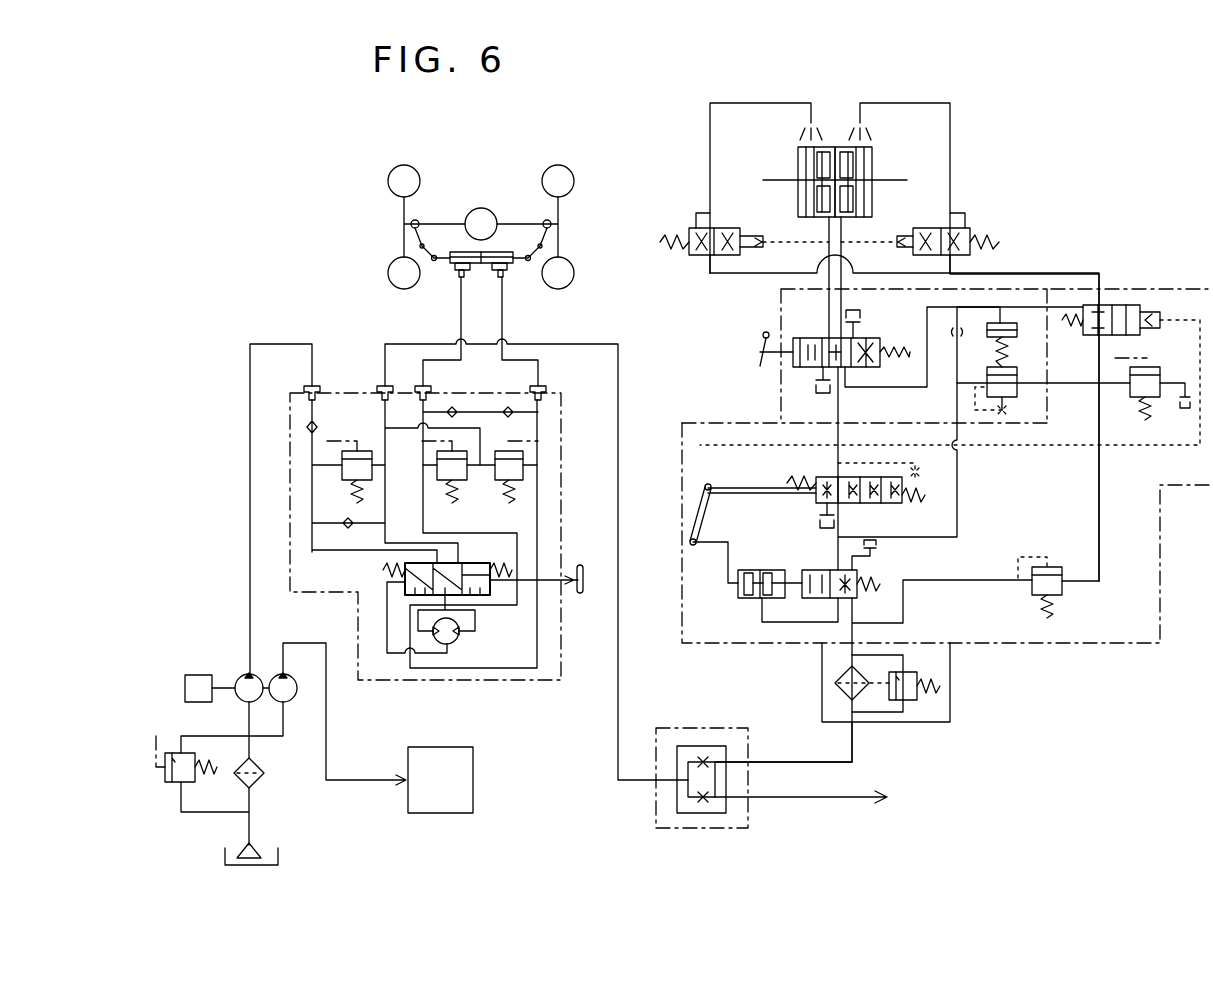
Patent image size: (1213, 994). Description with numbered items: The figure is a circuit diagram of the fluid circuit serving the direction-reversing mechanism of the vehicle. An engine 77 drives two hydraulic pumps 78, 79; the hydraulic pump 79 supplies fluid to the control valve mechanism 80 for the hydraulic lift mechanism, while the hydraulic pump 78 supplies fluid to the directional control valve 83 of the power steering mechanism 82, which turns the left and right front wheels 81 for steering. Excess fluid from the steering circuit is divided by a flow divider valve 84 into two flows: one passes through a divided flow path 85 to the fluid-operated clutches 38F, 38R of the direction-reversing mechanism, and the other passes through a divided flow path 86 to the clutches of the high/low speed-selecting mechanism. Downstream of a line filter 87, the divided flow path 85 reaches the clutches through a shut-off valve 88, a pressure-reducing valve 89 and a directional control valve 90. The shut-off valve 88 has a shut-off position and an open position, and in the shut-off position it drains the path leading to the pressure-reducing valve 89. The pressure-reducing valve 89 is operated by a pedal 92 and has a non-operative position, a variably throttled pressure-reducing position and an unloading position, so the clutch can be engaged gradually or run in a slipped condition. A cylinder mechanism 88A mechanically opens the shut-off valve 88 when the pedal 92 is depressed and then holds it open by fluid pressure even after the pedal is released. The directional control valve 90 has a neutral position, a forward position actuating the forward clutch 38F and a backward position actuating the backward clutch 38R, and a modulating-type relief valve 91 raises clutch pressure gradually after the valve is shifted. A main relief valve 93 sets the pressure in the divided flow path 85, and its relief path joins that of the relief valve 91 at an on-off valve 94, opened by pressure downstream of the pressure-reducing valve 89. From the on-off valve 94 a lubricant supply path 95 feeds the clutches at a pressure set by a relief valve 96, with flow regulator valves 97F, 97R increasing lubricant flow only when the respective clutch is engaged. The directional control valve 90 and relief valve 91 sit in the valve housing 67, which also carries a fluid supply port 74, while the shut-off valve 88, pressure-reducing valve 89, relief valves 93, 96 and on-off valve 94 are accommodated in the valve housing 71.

The forward directional fluid-operated clutch 38F is at (797, 157).
The backward directional fluid-operated clutch 38R is at (873, 157).
The valve housing 67 is at (779, 397).
The valve housing 71 is at (1162, 528).
The fluid supply port 74 is at (853, 738).
The engine 77 is at (190, 673).
The hydraulic pump 78 is at (238, 675).
The hydraulic pump 79 is at (290, 695).
The control valve mechanism 80 is at (452, 752).
The front wheels 81 is at (388, 181).
The power steering mechanism 82 is at (562, 417).
The directional control valve 83 is at (487, 567).
The flow divider valve 84 is at (683, 728).
The divided flow path 85 is at (773, 760).
The divided flow path 86 is at (837, 800).
The line filter 87 is at (835, 682).
The shut-off valve 88 is at (858, 573).
The cylinder mechanism 88A is at (757, 570).
The pressure-reducing valve 89 is at (816, 477).
The directional control valve 90 is at (797, 340).
The modulating-type relief valve 91 is at (1013, 375).
The pedal 92 is at (690, 540).
The main relief valve 93 is at (1062, 567).
The on-off valve 94 is at (1143, 305).
The lubricant supply path 95 is at (1058, 274).
The relief valve 96 is at (1160, 370).
The flow regulator valve 97F is at (745, 220).
The flow regulator valve 97R is at (968, 228).